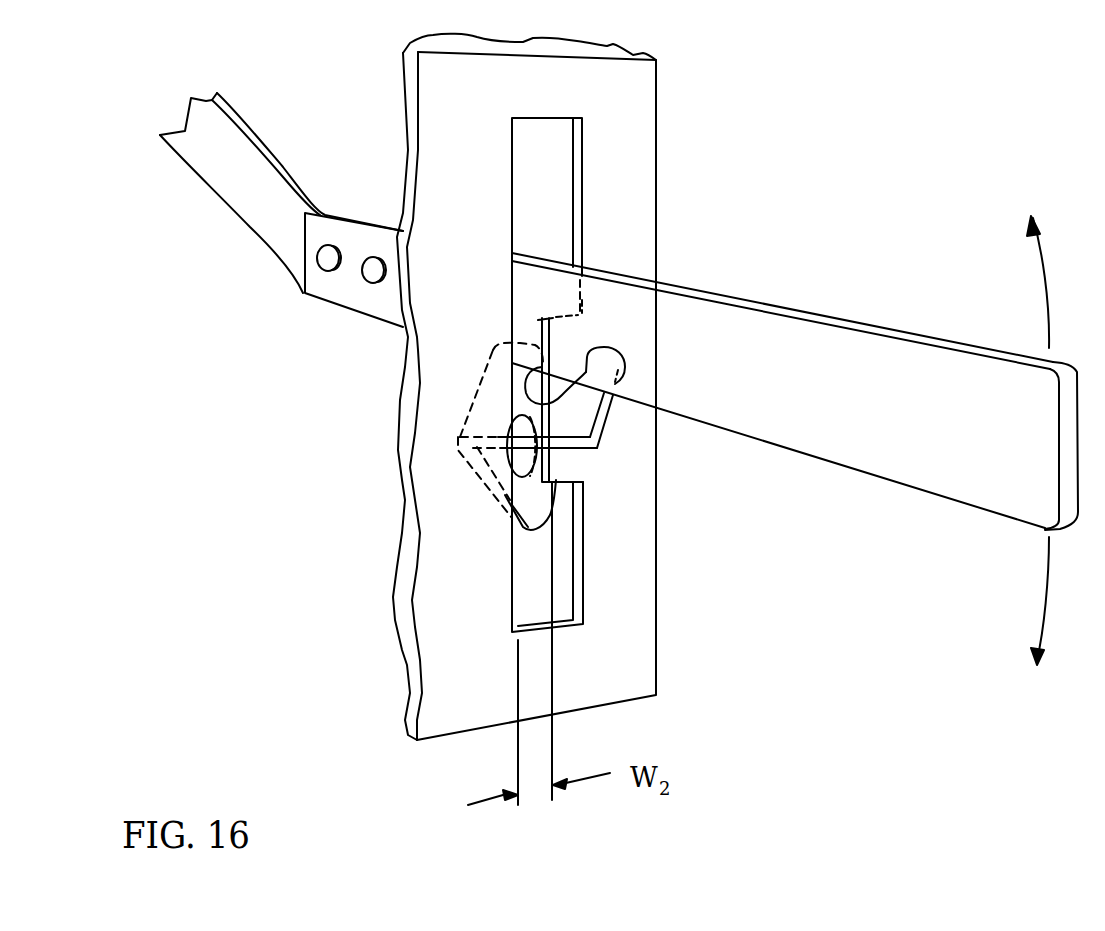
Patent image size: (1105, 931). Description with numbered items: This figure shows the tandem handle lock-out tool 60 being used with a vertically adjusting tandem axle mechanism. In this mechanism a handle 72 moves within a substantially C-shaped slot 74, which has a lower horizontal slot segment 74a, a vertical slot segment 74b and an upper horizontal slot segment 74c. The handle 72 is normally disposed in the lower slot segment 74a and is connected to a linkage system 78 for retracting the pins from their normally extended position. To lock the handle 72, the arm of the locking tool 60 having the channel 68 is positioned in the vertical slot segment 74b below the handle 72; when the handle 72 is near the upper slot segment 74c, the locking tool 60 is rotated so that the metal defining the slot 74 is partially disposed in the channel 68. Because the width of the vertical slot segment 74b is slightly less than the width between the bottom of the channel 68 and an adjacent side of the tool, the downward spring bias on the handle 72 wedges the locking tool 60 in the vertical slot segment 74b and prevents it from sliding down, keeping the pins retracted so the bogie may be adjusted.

The tandem handle lock-out tool 60 is at (598, 425).
The channel 68 is at (562, 396).
The handle 72 is at (886, 333).
The C-shaped slot 74 is at (540, 233).
The lower horizontal slot segment 74a is at (560, 600).
The vertical slot segment 74b is at (514, 395).
The upper horizontal slot segment 74c is at (562, 146).
The linkage system 78 is at (235, 104).